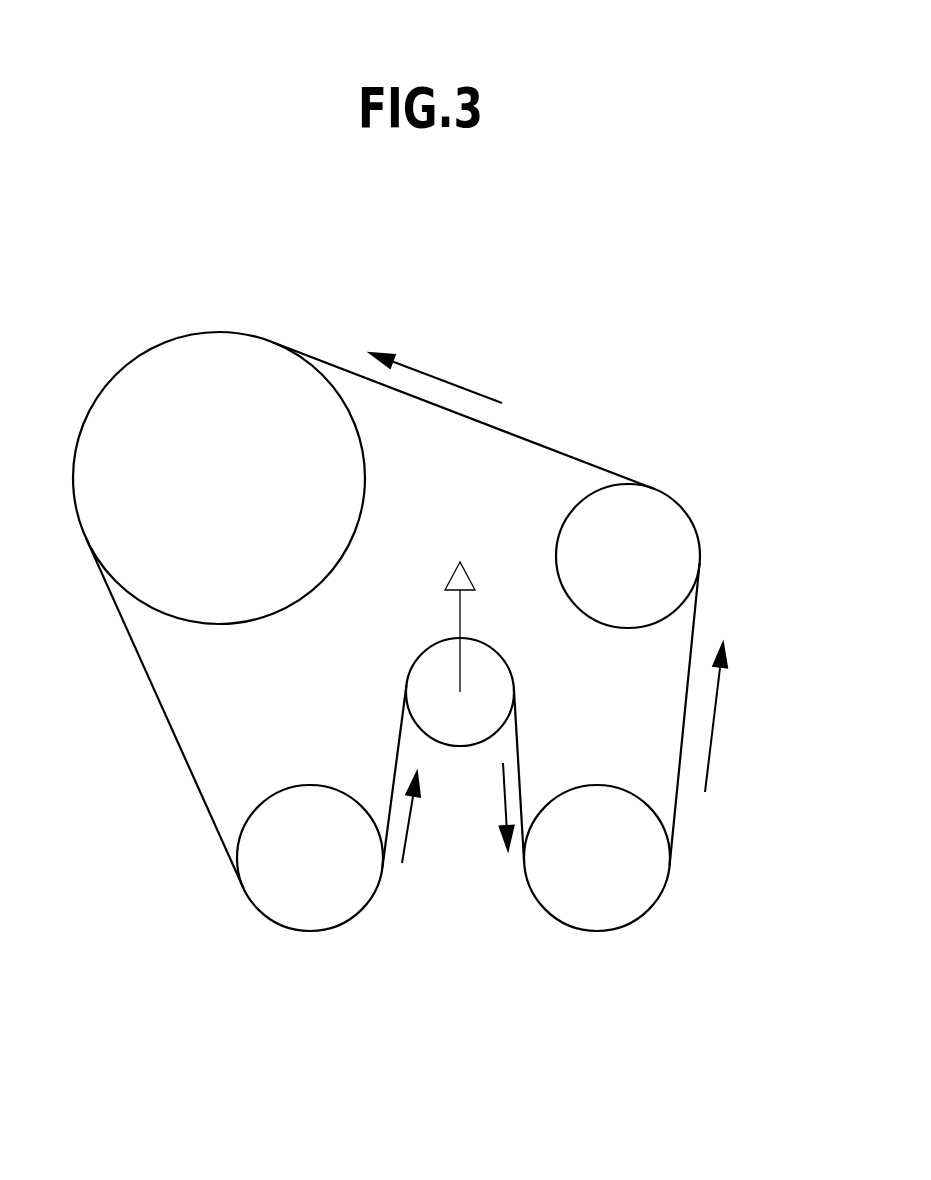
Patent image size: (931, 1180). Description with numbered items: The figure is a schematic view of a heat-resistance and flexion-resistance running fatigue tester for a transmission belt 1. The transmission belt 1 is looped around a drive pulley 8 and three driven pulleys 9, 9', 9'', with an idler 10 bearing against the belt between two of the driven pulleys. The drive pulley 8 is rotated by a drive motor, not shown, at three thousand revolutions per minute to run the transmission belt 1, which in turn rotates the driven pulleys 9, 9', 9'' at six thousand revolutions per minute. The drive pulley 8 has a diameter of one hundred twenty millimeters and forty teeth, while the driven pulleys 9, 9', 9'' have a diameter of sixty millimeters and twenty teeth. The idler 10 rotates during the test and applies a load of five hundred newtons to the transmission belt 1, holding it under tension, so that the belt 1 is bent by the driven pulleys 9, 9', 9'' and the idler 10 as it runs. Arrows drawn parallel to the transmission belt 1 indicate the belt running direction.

The transmission belt 1 is at (533, 440).
The drive pulley 8 is at (117, 388).
The driven pulley 9 is at (318, 898).
The driven pulley 9' is at (616, 898).
The driven pulley 9'' is at (669, 539).
The idler 10 is at (462, 733).